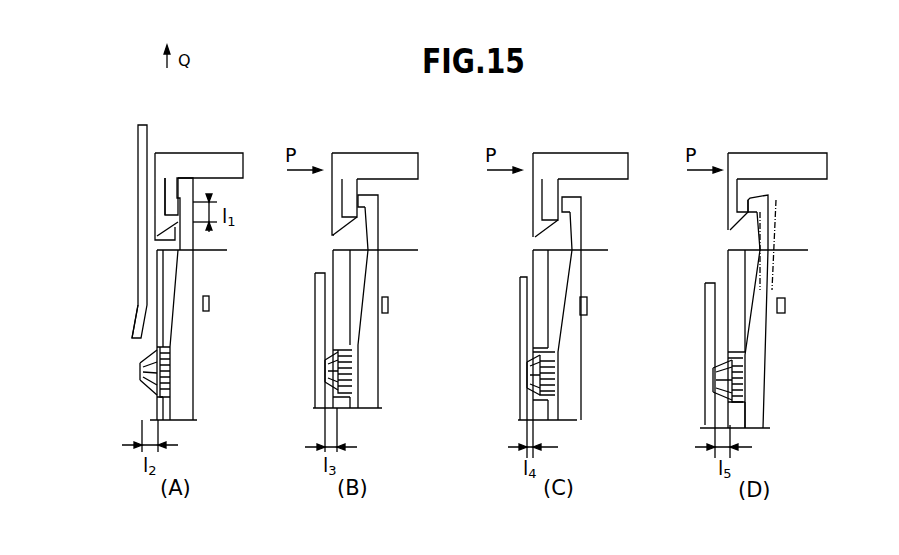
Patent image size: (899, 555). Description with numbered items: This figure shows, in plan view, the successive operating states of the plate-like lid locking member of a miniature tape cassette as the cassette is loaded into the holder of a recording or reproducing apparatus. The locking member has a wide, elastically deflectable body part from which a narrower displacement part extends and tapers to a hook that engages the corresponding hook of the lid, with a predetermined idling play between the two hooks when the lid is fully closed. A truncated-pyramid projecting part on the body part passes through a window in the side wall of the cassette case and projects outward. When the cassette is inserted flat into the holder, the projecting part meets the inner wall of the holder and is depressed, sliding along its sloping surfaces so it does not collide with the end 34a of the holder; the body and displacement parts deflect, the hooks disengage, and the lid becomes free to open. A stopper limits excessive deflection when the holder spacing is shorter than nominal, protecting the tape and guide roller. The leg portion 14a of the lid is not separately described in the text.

The leg portion of frame member 14a is at (160, 193).
The end of the holder 34a is at (140, 327).